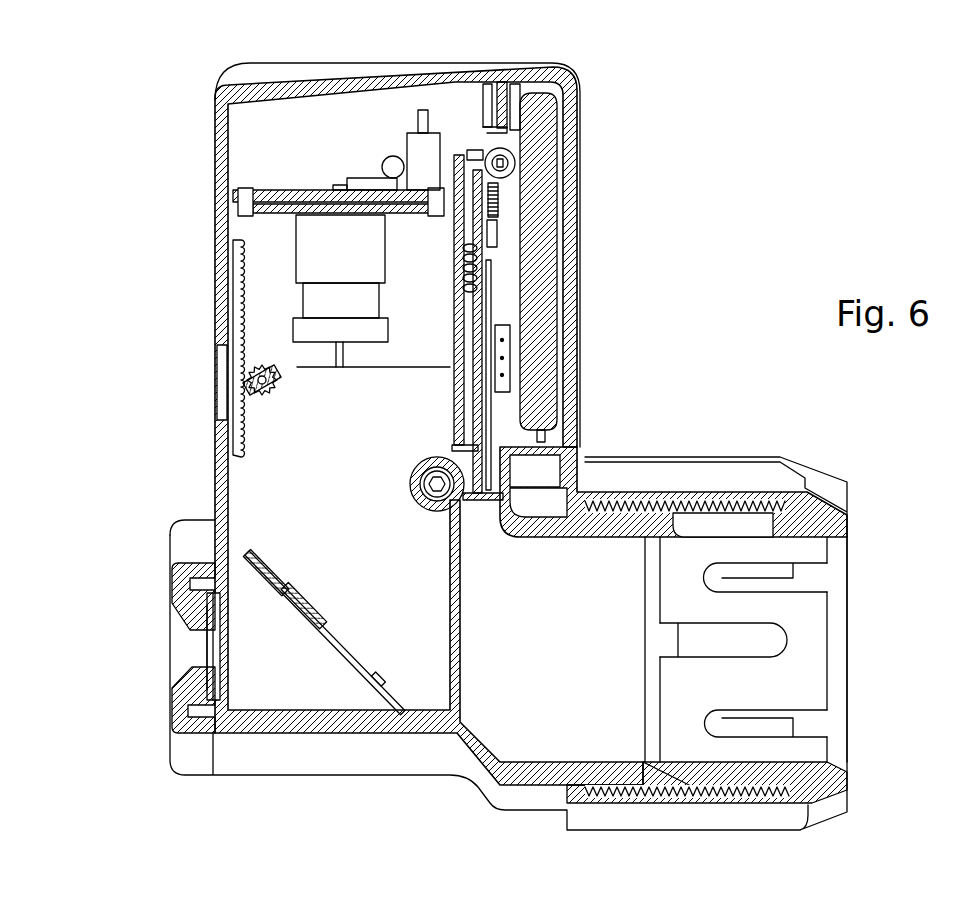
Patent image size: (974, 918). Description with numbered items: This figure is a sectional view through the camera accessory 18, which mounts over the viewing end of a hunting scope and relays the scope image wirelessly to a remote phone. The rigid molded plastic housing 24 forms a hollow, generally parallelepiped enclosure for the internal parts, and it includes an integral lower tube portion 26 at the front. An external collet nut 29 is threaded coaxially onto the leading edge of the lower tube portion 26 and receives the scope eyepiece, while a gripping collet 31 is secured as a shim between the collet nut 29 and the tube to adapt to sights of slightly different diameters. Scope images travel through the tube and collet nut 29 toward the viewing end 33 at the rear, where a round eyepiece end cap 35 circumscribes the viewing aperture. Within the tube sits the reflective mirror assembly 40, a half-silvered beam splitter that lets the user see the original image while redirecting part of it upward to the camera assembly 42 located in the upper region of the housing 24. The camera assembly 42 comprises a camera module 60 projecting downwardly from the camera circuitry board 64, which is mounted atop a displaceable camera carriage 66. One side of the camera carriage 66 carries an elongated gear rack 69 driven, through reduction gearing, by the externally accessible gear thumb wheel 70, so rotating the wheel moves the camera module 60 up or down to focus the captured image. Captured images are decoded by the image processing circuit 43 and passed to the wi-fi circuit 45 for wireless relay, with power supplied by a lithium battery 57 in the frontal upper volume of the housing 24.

The camera accessory 18 is at (65, 172).
The housing 24 is at (585, 164).
The lower tube portion 26 is at (474, 773).
The collet nut 29 is at (780, 803).
The gripping collet 31 is at (805, 646).
The viewing end 33 is at (158, 668).
The eyepiece end cap 35 is at (195, 536).
The reflective mirror assembly 40 is at (326, 665).
The camera assembly 42 is at (355, 382).
The image processing circuit 43 is at (372, 160).
The wi-fi circuit 45 is at (455, 137).
The lithium battery 57 is at (540, 272).
The camera module 60 is at (330, 253).
The camera circuitry board 64 is at (310, 192).
The camera carriage 66 is at (449, 322).
The gear rack 69 is at (235, 423).
The gear thumb wheel 70 is at (270, 392).